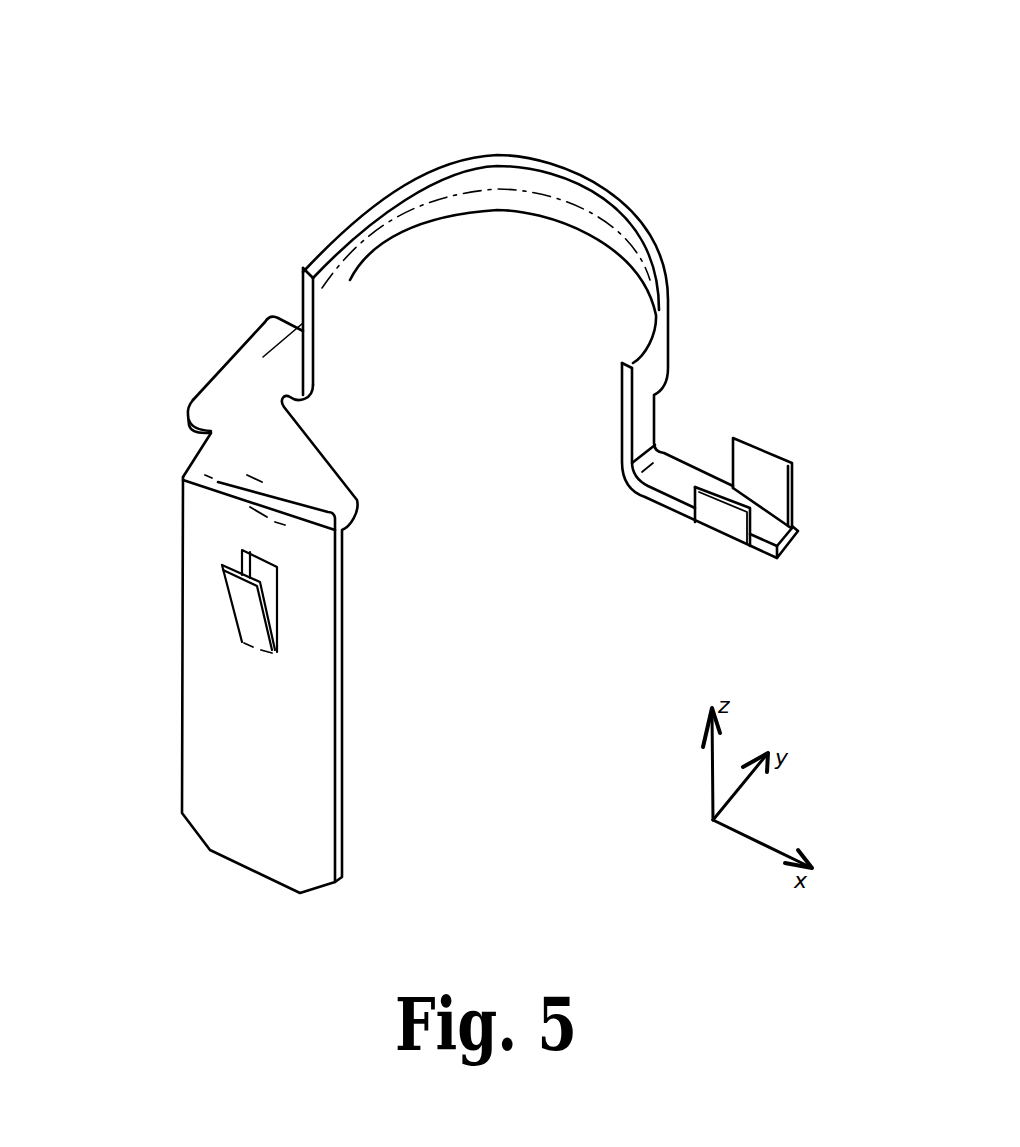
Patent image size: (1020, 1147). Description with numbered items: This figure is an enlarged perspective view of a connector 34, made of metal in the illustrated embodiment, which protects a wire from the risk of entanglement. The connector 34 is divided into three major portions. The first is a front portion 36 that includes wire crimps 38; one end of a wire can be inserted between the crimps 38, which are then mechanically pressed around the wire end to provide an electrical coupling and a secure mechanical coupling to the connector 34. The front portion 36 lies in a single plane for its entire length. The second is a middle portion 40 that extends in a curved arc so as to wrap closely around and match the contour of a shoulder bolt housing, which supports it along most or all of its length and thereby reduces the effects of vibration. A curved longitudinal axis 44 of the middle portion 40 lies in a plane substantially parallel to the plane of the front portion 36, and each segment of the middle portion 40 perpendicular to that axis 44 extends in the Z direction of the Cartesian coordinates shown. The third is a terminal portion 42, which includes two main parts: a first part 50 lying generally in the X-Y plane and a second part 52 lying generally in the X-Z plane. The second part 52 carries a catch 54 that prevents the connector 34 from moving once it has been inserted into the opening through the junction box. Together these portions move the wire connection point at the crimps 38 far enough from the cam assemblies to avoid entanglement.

The connector 34 is at (580, 57).
The front portion 36 is at (767, 568).
The wire crimps 38 is at (763, 485).
The middle portion 40 is at (697, 157).
The terminal portion 42 is at (178, 305).
The curved longitudinal axis 44 is at (266, 326).
The first part 50 is at (240, 413).
The second part 52 is at (292, 757).
The catch 54 is at (259, 605).